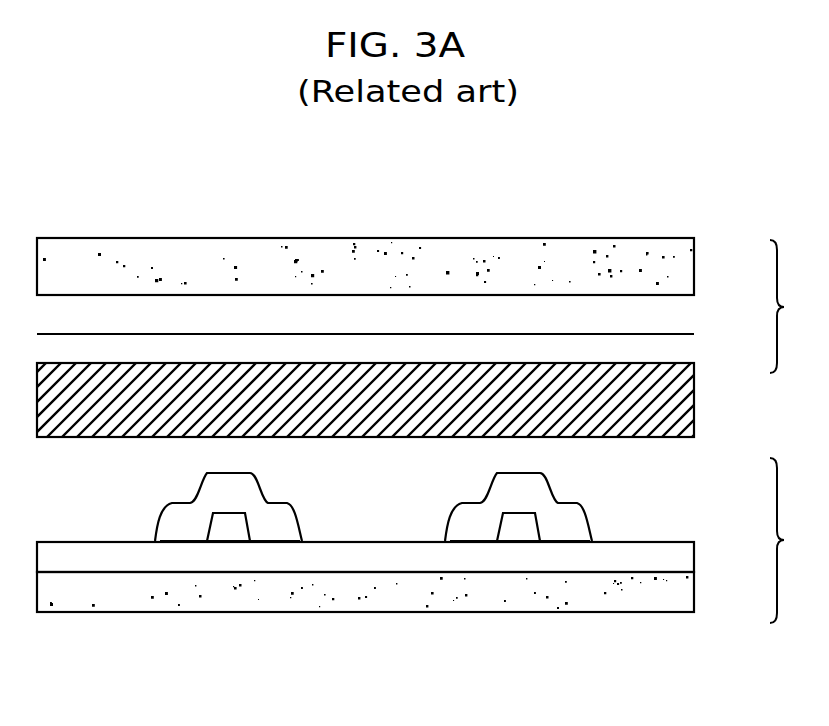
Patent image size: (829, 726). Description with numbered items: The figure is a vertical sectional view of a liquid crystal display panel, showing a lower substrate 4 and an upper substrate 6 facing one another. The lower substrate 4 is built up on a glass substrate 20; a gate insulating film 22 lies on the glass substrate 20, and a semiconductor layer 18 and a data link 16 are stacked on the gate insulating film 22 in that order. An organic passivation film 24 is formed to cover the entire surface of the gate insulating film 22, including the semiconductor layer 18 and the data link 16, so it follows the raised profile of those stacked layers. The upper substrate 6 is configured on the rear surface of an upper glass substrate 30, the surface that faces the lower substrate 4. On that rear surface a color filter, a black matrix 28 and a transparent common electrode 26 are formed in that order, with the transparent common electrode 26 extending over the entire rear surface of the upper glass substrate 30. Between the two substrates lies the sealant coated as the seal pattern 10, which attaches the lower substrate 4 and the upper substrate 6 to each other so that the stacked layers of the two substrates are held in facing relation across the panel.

The lower substrate 4 is at (791, 540).
The upper substrate 6 is at (791, 306).
The seal pattern 10 is at (684, 404).
The data link 16 is at (183, 527).
The semiconductor layer 18 is at (233, 528).
The glass substrate 20 is at (684, 597).
The gate insulating film 22 is at (684, 553).
The organic passivation film 24 is at (684, 481).
The transparent common electrode 26 is at (684, 355).
The black matrix 28 is at (684, 313).
The upper glass substrate 30 is at (684, 265).